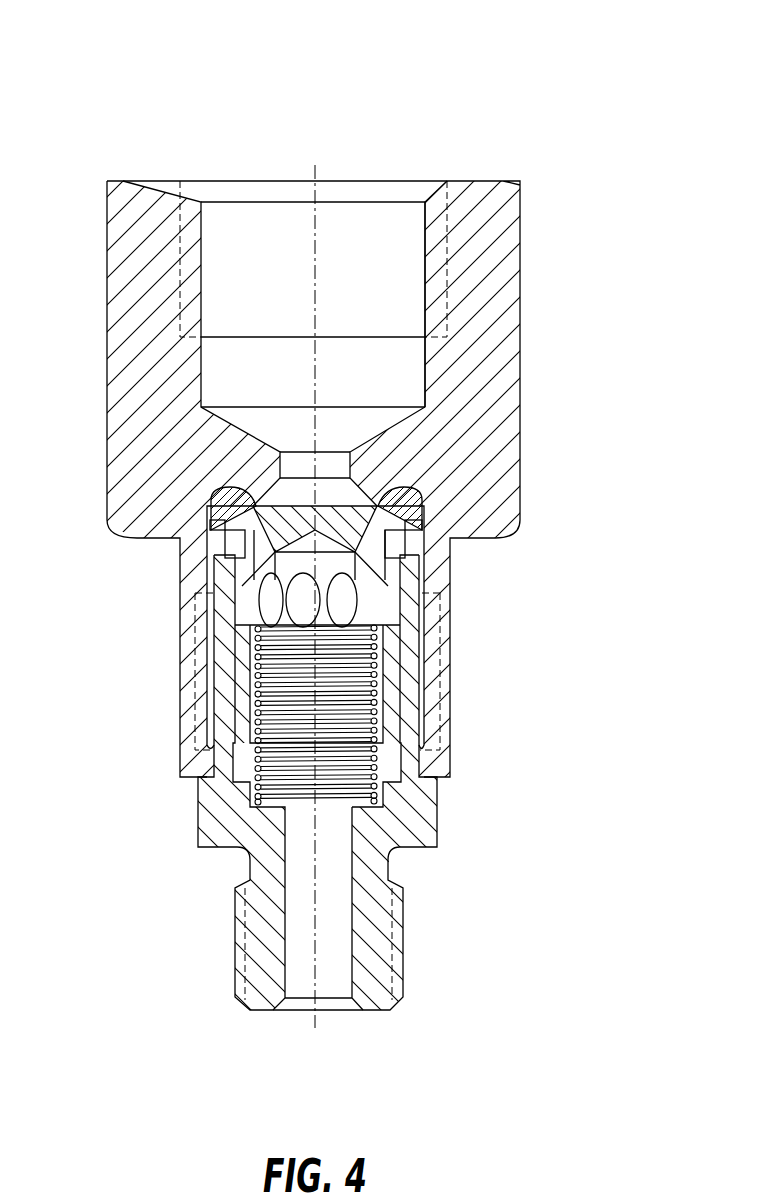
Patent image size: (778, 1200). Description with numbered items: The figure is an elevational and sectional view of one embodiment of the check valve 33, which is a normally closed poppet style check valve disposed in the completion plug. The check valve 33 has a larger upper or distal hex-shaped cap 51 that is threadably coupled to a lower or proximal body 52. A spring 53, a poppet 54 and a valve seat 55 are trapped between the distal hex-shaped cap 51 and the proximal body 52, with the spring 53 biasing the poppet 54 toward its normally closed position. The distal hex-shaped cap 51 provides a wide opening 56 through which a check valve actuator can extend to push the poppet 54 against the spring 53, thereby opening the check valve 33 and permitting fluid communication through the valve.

The check valve 33 is at (562, 62).
The distal hex-shaped cap 51 is at (522, 318).
The proximal body 52 is at (198, 808).
The spring 53 is at (380, 762).
The poppet 54 is at (273, 523).
The valve seat 55 is at (416, 490).
The wide opening 56 is at (425, 258).